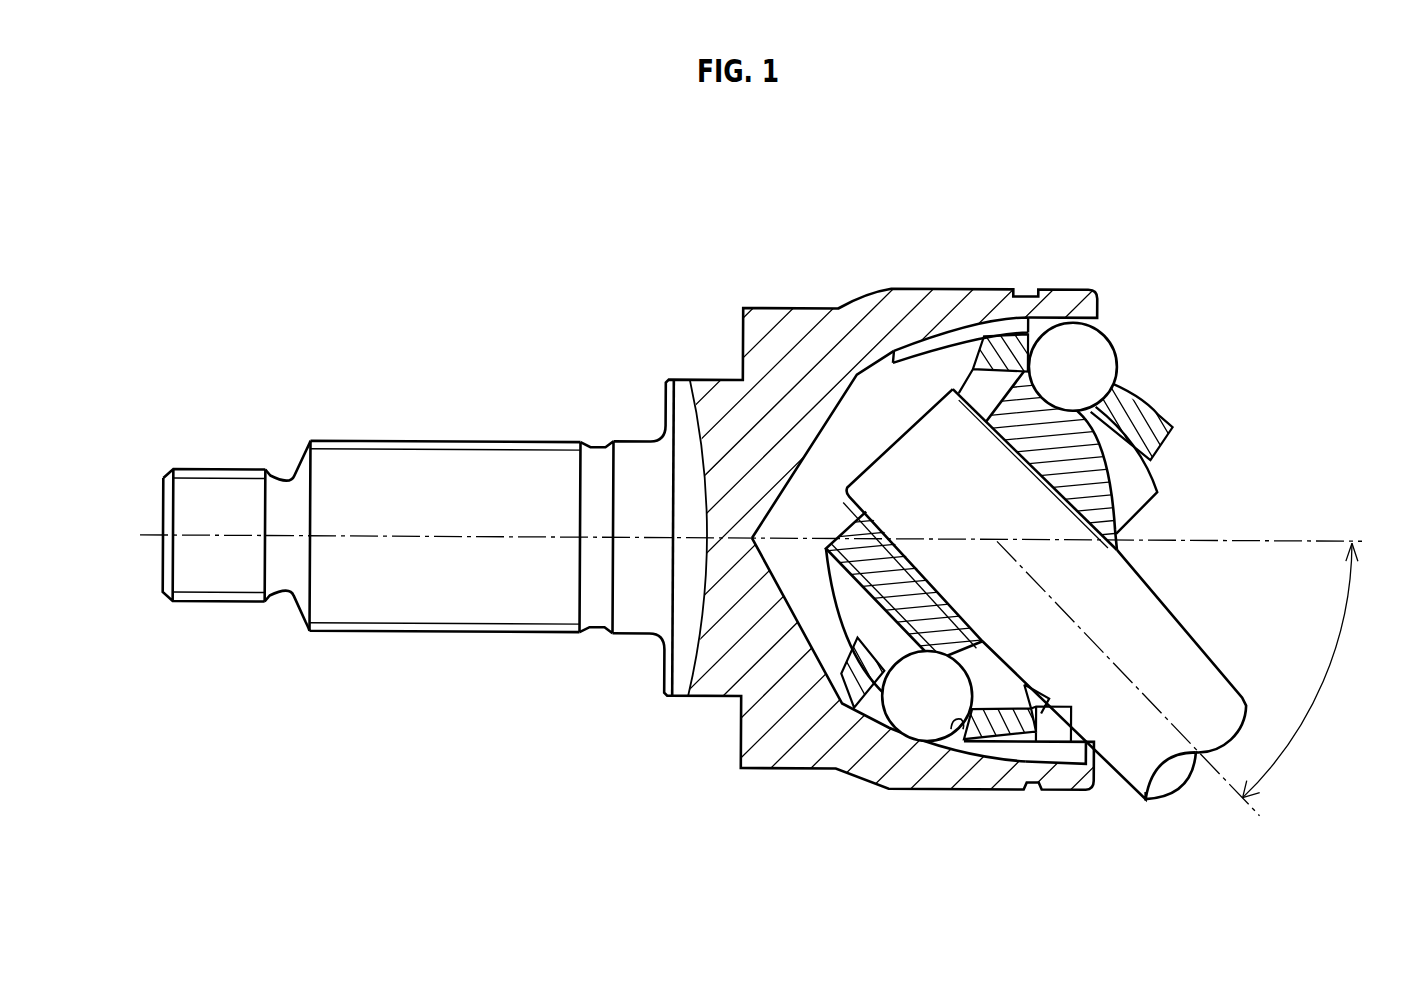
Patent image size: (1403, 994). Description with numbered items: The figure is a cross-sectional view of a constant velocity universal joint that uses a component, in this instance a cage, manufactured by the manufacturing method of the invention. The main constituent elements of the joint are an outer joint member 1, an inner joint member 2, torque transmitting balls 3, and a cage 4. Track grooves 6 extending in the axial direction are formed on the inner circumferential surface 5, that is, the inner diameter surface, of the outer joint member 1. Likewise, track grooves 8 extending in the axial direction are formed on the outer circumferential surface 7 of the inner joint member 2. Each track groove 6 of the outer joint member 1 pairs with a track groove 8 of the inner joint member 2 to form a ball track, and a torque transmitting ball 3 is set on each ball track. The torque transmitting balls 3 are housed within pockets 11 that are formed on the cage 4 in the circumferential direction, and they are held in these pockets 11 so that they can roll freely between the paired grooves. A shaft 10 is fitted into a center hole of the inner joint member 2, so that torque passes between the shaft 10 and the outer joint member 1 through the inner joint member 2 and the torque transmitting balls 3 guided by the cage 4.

The outer joint member 1 is at (945, 288).
The inner joint member 2 is at (1150, 497).
The torque transmitting ball 3 is at (918, 718).
The cage 4 is at (1007, 733).
The inner circumferential surface 5 is at (937, 350).
The track groove 6 is at (1042, 327).
The outer circumferential surface 7 is at (1122, 400).
The track groove 8 is at (1100, 468).
The shaft 10 is at (1167, 643).
The pocket 11 is at (955, 728).